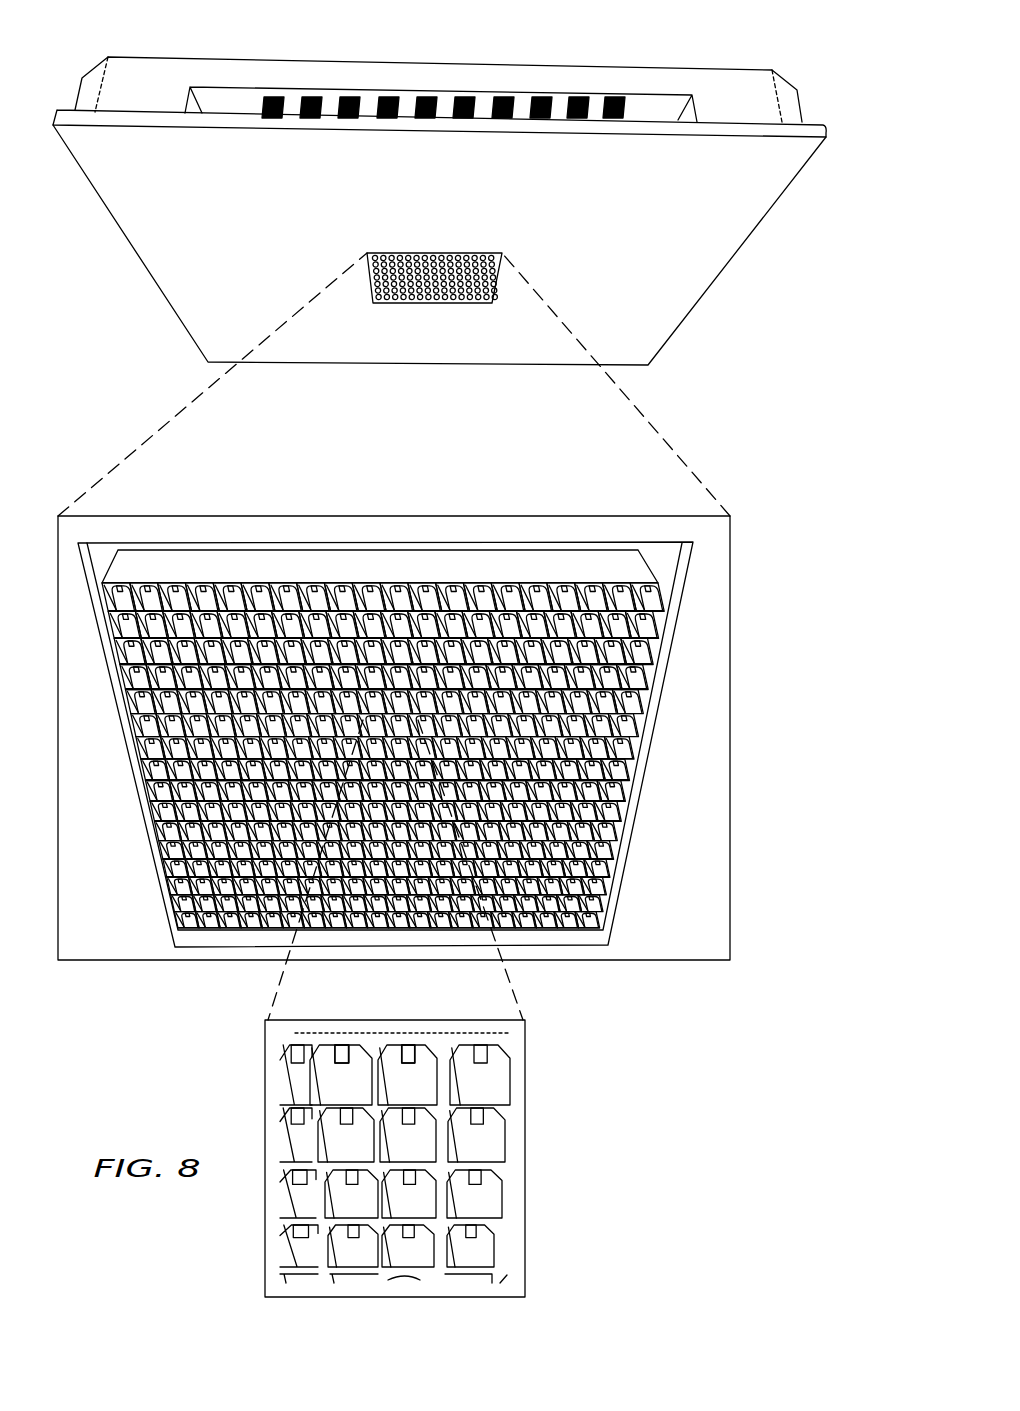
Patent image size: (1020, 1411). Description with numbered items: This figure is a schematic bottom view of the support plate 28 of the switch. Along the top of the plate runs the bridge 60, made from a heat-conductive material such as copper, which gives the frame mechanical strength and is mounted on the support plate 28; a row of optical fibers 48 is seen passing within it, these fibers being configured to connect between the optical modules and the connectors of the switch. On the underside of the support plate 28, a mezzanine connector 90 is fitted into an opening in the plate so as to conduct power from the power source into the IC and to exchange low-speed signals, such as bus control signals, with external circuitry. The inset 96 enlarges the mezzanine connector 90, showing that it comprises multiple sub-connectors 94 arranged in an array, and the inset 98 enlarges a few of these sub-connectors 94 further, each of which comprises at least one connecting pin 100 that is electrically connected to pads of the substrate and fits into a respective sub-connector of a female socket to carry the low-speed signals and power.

The support plate 28 is at (747, 218).
The optical fibers 48 is at (508, 96).
The bridge 60 is at (727, 72).
The mezzanine connector 90 is at (430, 318).
The sub-connectors 94 is at (200, 868).
The inset 96 is at (735, 768).
The inset 98 is at (265, 1232).
The connecting pin 100 is at (345, 1055).